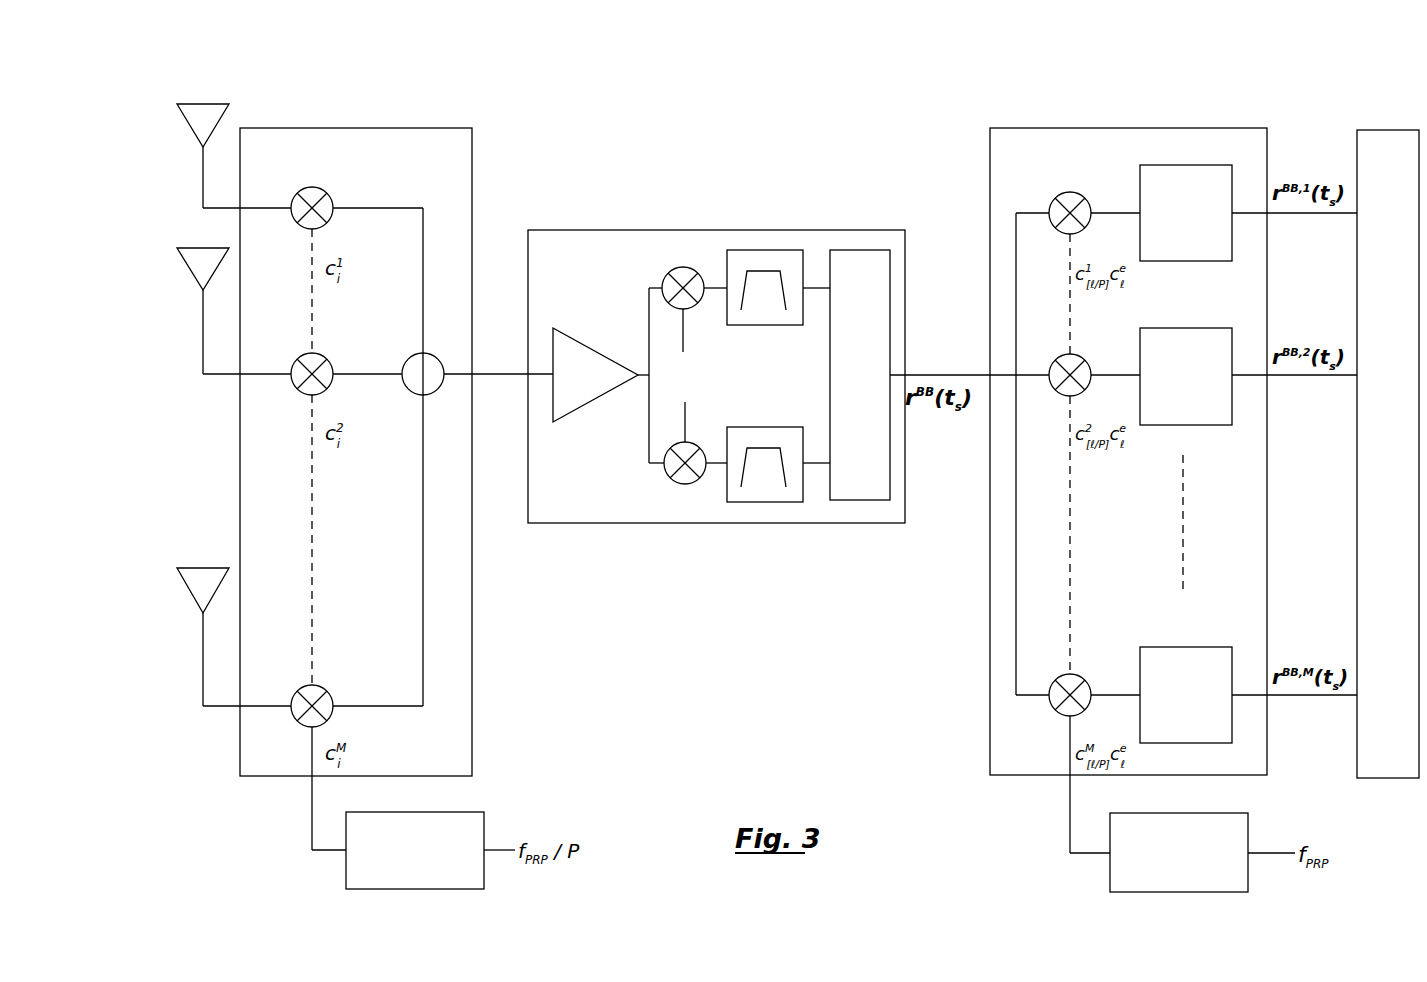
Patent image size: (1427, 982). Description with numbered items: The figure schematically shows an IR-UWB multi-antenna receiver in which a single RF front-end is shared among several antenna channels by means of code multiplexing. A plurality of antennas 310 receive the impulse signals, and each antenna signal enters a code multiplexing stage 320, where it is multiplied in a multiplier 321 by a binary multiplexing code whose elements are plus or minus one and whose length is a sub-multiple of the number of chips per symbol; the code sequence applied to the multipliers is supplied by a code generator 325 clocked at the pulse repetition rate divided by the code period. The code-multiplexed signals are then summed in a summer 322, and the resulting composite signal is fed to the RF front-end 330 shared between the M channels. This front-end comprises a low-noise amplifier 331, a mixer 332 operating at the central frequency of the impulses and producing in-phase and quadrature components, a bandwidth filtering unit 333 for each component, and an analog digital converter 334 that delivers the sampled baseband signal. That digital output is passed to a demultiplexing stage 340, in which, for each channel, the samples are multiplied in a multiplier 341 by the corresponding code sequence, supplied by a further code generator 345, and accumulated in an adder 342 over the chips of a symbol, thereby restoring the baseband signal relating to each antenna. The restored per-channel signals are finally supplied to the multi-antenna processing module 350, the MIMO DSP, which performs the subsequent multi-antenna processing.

The antennas 310 is at (190, 103).
The code multiplexing stage 320 is at (472, 152).
The multiplier 321 is at (305, 187).
The summer 322 is at (443, 352).
The code generator 325 is at (484, 815).
The RF front-end 330 is at (573, 230).
The low-noise amplifier 331 is at (583, 405).
The mixer 332 is at (683, 487).
The bandwidth filtering unit 333 is at (766, 503).
The analog digital converter 334 is at (872, 500).
The demultiplexing stage 340 is at (1012, 128).
The multiplier 341 is at (1070, 190).
The adder 342 is at (1190, 165).
The code generator 345 is at (1112, 813).
The multi-antenna processing module (MIMO DSP) 350 is at (1390, 130).